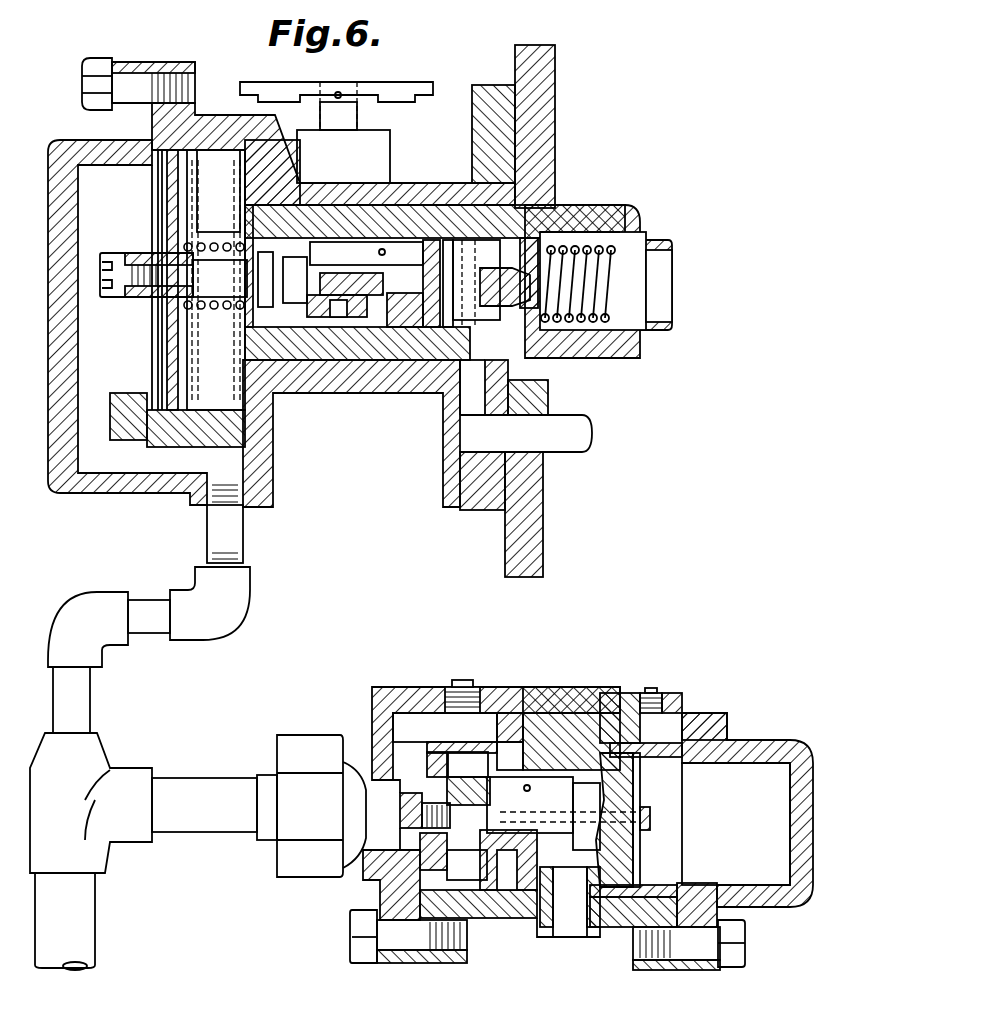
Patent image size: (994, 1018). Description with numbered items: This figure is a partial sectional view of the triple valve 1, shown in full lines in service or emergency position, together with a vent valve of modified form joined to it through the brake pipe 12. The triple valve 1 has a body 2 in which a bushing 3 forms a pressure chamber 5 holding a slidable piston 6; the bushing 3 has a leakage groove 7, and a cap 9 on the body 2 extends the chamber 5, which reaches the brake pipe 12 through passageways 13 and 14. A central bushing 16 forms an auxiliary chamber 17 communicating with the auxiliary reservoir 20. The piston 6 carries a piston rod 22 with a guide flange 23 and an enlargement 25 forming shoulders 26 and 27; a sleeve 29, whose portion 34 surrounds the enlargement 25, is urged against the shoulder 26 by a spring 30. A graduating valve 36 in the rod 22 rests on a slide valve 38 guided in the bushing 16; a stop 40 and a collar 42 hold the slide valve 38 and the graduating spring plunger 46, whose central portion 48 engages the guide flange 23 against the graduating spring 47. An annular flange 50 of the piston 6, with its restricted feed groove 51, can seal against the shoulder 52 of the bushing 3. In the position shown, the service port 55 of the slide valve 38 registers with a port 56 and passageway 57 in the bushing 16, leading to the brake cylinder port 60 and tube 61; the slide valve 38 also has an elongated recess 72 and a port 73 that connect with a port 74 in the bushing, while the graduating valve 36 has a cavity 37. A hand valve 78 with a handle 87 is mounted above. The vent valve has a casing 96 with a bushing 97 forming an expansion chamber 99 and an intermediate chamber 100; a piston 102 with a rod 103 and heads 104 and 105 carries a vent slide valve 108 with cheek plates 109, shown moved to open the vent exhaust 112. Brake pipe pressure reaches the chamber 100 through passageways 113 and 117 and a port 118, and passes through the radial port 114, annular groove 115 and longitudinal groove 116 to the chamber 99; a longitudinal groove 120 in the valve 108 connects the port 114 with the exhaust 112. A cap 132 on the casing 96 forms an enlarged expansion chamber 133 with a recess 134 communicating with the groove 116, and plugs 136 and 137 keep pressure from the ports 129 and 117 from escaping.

The triple valve 1 is at (48, 147).
The body 2 is at (262, 120).
The bushing 3 is at (150, 138).
The pressure chamber 5 is at (178, 337).
The piston 6 is at (170, 202).
The leakage groove 7 is at (218, 113).
The cap 9 is at (50, 185).
The brake pipe 12 is at (228, 785).
The passageway 13 is at (88, 425).
The passageway 14 is at (170, 462).
The bushing 16 is at (312, 205).
The auxiliary chamber 17 is at (415, 170).
The auxiliary reservoir 20 is at (540, 120).
The piston rod 22 is at (160, 300).
The guide flange 23 is at (457, 275).
The enlargement 25 is at (262, 268).
The shoulder 26 is at (262, 290).
The shoulder 27 is at (275, 280).
The sleeve 29 is at (245, 335).
The spring 30 is at (212, 245).
The portion of sleeve 34 is at (245, 350).
The graduating valve 36 is at (345, 270).
The cavity 37 is at (330, 360).
The slide valve 38 is at (300, 360).
The stop 40 is at (540, 380).
The collar 42 is at (500, 215).
The graduating spring plunger 46 is at (630, 232).
The graduating spring 47 is at (600, 270).
The central portion of plunger 48 is at (488, 280).
The annular flange 50 is at (188, 194).
The restricted feed groove 51 is at (232, 112).
The shoulder 52 is at (240, 150).
The service port 55 is at (385, 360).
The port 56 is at (400, 360).
The passageway 57 is at (435, 360).
The brake cylinder port 60 is at (472, 470).
The tube 61 is at (575, 452).
The elongated recess 72 is at (312, 360).
The port 73 is at (360, 360).
The port 74 is at (355, 360).
The hand valve 78 is at (360, 125).
The handle 87 is at (395, 92).
The casing 96 is at (355, 880).
The bushing 97 is at (668, 757).
The expansion chamber 99 is at (670, 858).
The intermediate chamber 100 is at (610, 770).
The piston 102 is at (422, 822).
The piston rod 103 is at (545, 815).
The head 104 is at (425, 788).
The head 105 is at (640, 782).
The vent slide valve 108 is at (500, 918).
The cheek plates 109 is at (560, 780).
The vent exhaust 112 is at (568, 905).
The passageway 113 is at (440, 768).
The radial port 114 is at (540, 918).
The annular groove 115 is at (518, 946).
The longitudinal groove 116 is at (655, 815).
The passageway 117 is at (445, 727).
The port 118 is at (515, 752).
The longitudinal groove 120 is at (570, 823).
The port 129 is at (700, 712).
The cap 132 is at (775, 742).
The enlarged expansion chamber 133 is at (736, 824).
The recess 134 is at (680, 815).
The plug 136 is at (652, 688).
The plug 137 is at (470, 680).